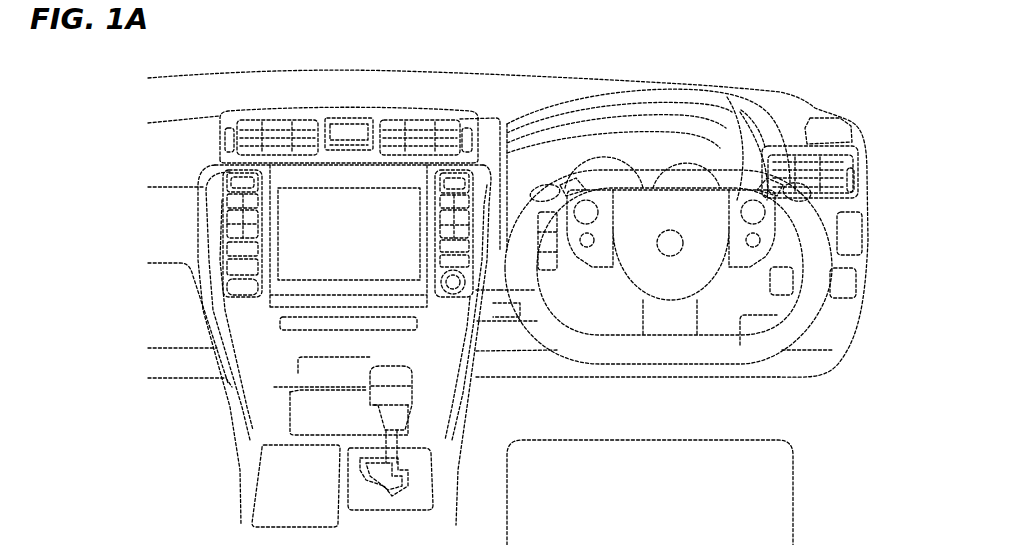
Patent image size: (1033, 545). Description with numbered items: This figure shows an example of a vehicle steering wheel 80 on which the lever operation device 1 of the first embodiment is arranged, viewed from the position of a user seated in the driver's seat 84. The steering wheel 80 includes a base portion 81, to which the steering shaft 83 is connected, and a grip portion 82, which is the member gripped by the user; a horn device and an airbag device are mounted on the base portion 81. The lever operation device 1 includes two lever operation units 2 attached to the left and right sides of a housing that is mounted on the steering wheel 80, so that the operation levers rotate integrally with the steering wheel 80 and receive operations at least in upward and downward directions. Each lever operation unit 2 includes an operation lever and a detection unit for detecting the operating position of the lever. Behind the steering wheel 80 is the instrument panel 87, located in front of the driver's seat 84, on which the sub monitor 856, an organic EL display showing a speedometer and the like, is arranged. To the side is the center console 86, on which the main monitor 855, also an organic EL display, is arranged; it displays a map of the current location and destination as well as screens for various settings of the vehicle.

The lever operation device 1 is at (671, 105).
The lever operation unit 2 is at (763, 180).
The steering wheel 80 is at (787, 355).
The base portion 81 is at (687, 300).
The grip portion 82 is at (740, 350).
The steering shaft 83 is at (668, 258).
The driver's seat 84 is at (773, 497).
The center console 86 is at (280, 160).
The instrument panel 87 is at (516, 120).
The main monitor 855 is at (317, 203).
The sub monitor 856 is at (570, 140).